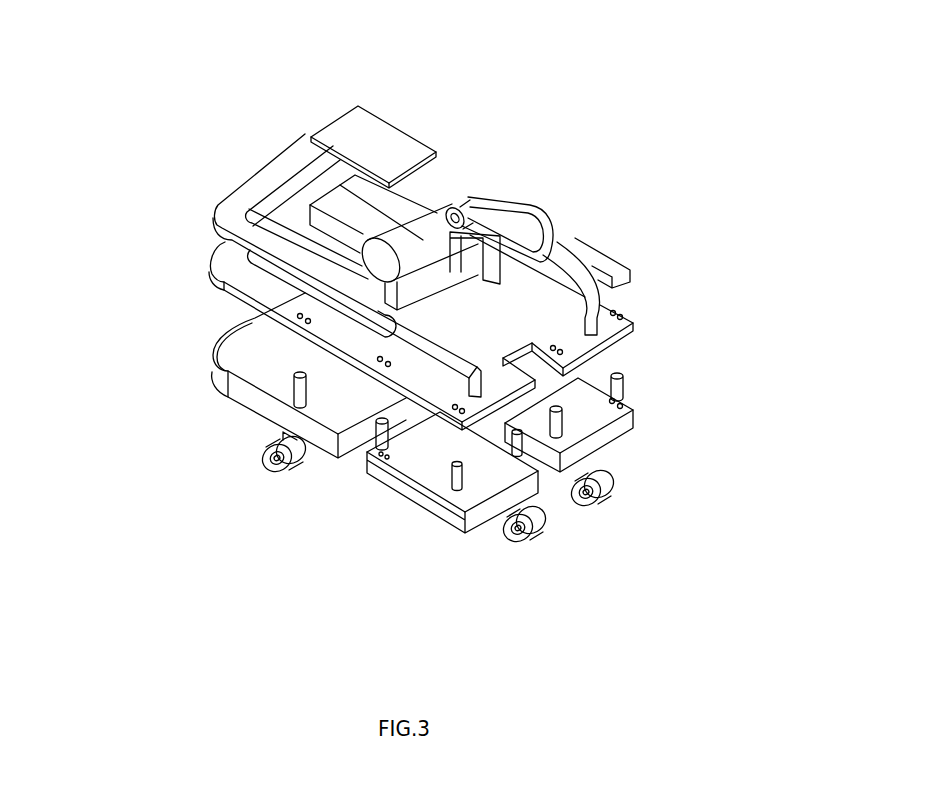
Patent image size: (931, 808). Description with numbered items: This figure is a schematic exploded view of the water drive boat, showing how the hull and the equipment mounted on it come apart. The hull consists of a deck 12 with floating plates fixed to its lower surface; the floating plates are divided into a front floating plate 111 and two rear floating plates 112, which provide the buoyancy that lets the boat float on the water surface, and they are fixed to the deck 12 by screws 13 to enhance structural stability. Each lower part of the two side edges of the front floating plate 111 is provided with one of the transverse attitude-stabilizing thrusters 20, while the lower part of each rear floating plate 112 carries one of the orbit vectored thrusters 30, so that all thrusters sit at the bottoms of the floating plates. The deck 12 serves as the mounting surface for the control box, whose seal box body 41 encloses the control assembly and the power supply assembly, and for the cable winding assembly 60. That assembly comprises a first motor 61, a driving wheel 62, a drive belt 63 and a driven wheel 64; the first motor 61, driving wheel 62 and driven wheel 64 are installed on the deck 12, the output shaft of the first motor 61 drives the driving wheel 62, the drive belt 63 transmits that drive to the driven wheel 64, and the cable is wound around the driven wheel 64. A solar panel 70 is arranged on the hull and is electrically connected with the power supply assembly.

The deck 12 is at (633, 323).
The screws 13 is at (627, 390).
The transverse attitude-stabilizing thrusters 20 is at (267, 465).
The orbit vectored thrusters 30 is at (607, 497).
The seal box body 41 is at (353, 200).
The cable winding assembly 60 is at (595, 184).
The first motor 61 is at (452, 193).
The driving wheel 62 is at (470, 186).
The drive belt 63 is at (518, 210).
The driven wheel 64 is at (595, 250).
The solar panel 70 is at (357, 130).
The front floating plate 111 is at (237, 407).
The rear floating plates 112 is at (627, 423).